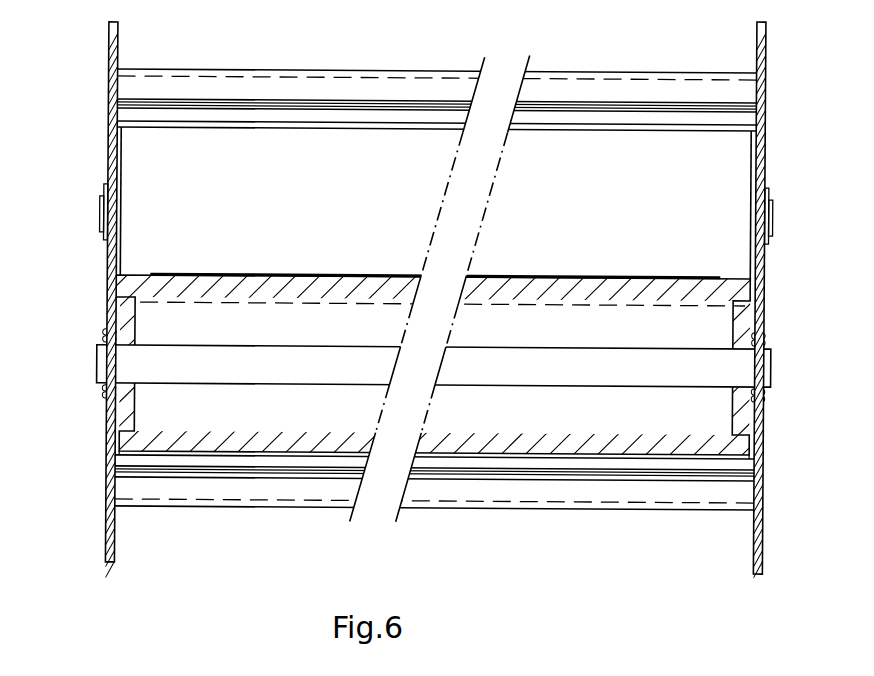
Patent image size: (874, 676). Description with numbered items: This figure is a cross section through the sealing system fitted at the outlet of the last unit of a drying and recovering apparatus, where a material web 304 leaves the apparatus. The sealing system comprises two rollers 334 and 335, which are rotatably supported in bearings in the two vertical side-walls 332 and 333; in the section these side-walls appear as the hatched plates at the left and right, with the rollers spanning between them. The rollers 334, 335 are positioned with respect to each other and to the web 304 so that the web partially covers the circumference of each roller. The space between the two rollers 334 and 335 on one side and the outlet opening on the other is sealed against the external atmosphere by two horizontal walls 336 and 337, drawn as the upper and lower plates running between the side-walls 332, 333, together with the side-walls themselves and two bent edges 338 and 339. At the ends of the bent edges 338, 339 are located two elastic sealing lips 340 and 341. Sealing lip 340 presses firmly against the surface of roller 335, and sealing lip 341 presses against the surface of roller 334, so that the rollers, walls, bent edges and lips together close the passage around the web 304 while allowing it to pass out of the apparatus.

The material web 304 is at (286, 276).
The side-wall 332 is at (110, 492).
The side-wall 333 is at (760, 86).
The roller 334 is at (752, 170).
The roller 335 is at (750, 301).
The horizontal wall 336 is at (603, 509).
The horizontal wall 337 is at (664, 71).
The bent edge 338 is at (748, 497).
The bent edge 339 is at (125, 86).
The elastic sealing lip 340 is at (752, 446).
The elastic sealing lip 341 is at (118, 127).